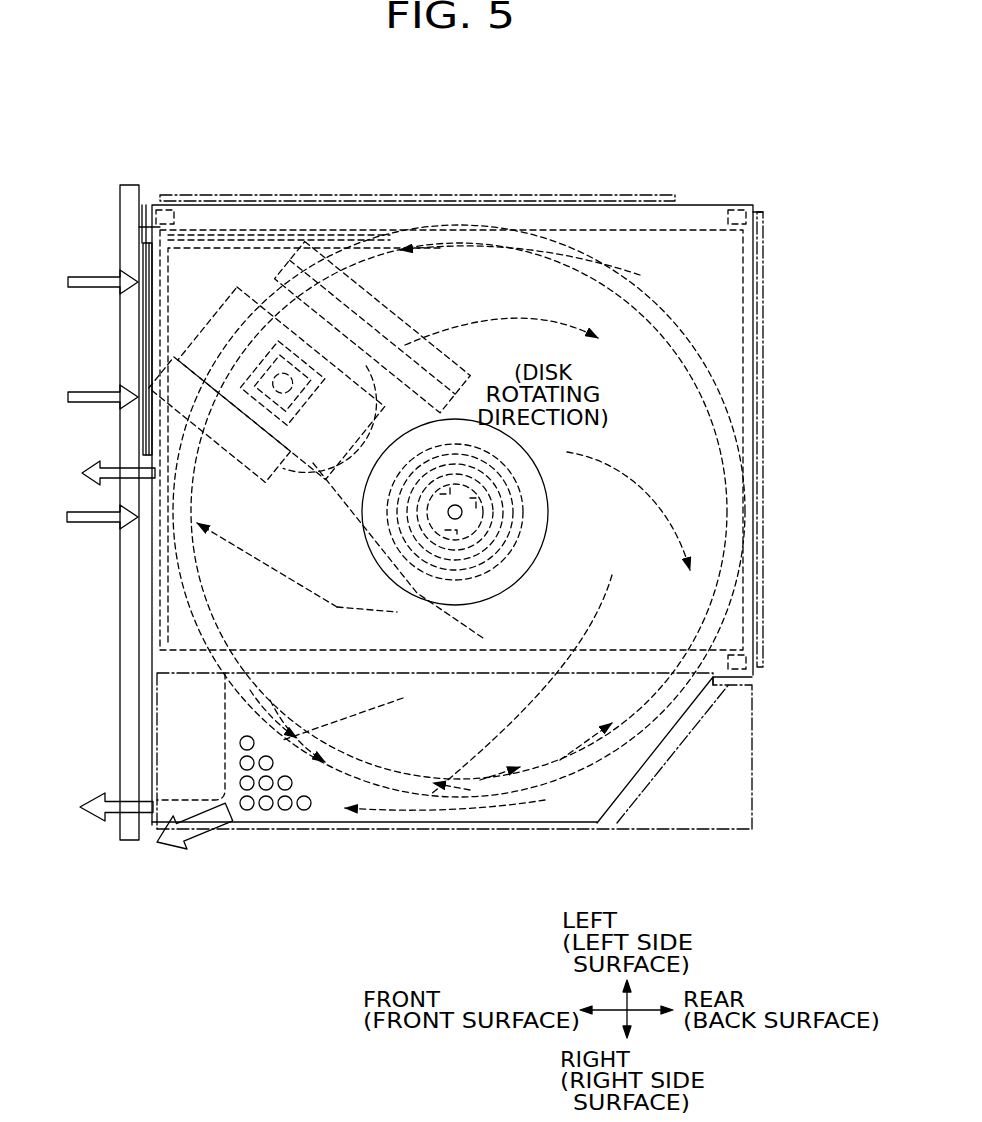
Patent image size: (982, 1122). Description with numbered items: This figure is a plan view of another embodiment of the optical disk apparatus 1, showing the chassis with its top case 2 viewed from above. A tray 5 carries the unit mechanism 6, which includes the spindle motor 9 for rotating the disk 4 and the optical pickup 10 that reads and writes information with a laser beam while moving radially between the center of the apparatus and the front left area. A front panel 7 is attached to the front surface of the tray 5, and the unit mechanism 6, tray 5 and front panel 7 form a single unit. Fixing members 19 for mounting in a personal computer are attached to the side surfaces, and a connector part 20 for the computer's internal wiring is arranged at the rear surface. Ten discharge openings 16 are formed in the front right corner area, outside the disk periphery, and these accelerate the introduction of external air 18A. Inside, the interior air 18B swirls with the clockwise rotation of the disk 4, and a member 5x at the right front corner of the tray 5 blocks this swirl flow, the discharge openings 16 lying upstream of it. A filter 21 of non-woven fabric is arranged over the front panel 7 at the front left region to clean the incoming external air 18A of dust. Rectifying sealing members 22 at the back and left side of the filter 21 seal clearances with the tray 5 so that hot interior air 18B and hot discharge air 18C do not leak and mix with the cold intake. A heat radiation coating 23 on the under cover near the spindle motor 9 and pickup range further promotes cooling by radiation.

The optical disk apparatus 1 is at (428, 178).
The top case 2 is at (545, 800).
The disk 4 is at (555, 305).
The tray 5 is at (641, 262).
The member for blocking the swirl flow 5x is at (172, 713).
The unit mechanism 6 is at (420, 325).
The front panel 7 is at (130, 612).
The spindle motor 9 is at (472, 499).
The optical pickup 10 is at (303, 347).
The discharge openings 16 is at (288, 806).
The external air 18A is at (80, 282).
The interior air 18B is at (596, 657).
The discharge air 18C is at (108, 818).
The fixing member 19 is at (513, 200).
The connector part 20 is at (763, 582).
The filter 21 is at (147, 222).
The rectifying sealing member 22 is at (213, 227).
The heat radiation coating 23 is at (250, 262).